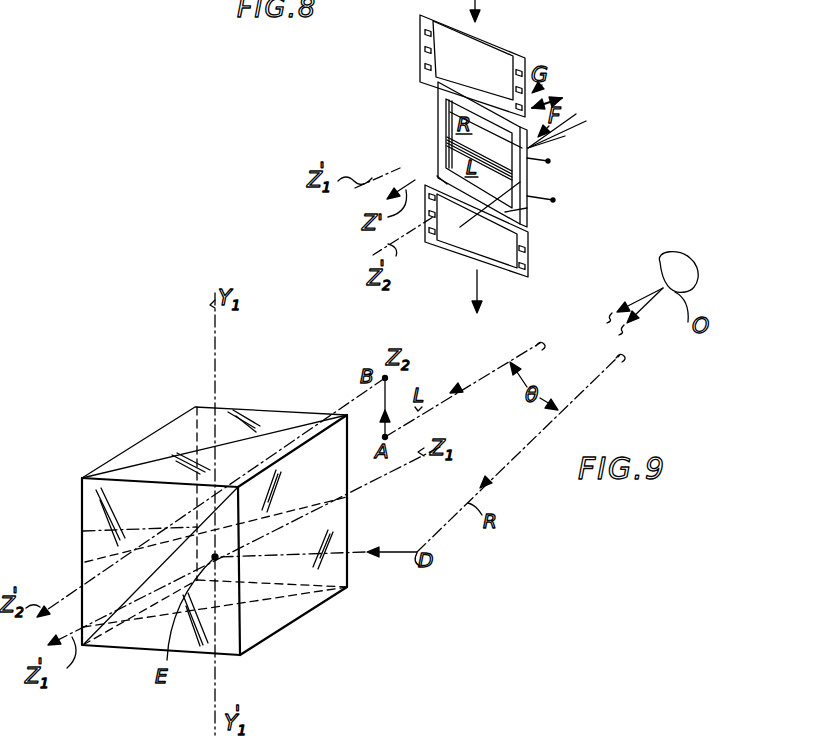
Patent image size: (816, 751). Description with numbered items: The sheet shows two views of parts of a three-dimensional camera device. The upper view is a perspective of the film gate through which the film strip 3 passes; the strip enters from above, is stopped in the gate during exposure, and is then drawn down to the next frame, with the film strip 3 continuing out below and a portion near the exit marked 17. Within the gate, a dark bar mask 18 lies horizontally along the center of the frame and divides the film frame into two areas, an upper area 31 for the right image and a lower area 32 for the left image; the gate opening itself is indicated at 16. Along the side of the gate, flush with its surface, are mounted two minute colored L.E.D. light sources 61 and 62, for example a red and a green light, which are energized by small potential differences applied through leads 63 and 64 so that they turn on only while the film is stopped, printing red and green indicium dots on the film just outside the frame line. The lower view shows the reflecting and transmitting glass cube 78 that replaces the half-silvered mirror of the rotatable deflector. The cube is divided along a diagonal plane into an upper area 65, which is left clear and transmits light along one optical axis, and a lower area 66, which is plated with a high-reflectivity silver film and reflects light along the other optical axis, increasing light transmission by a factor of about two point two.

In FIG. 8, the film strip 3 is at (447, 31).
In FIG. 8, the right image area 31 is at (438, 108).
In FIG. 8, the dark bar mask 18 is at (455, 152).
In FIG. 8, the aperture band 16 is at (514, 162).
In FIG. 8, the L.E.D. light source 61 is at (532, 148).
In FIG. 8, the lead 63 is at (548, 161).
In FIG. 8, the lead 64 is at (553, 200).
In FIG. 8, the L.E.D. light source 62 is at (528, 206).
In FIG. 8, the film strip 17 is at (530, 230).
In FIG. 8, the left image area 32 is at (437, 176).
In FIG. 9, the cube 78 is at (157, 432).
In FIG. 9, the upper area 65 is at (97, 530).
In FIG. 9, the lower area 66 is at (262, 594).